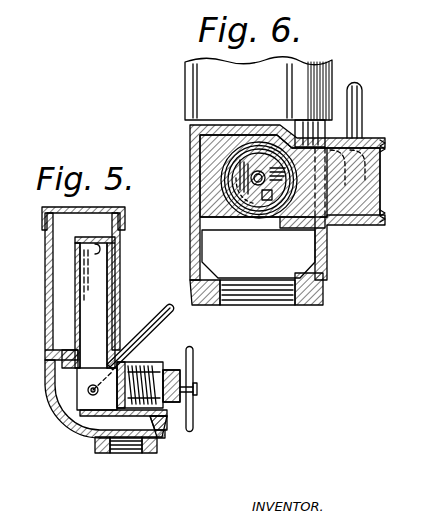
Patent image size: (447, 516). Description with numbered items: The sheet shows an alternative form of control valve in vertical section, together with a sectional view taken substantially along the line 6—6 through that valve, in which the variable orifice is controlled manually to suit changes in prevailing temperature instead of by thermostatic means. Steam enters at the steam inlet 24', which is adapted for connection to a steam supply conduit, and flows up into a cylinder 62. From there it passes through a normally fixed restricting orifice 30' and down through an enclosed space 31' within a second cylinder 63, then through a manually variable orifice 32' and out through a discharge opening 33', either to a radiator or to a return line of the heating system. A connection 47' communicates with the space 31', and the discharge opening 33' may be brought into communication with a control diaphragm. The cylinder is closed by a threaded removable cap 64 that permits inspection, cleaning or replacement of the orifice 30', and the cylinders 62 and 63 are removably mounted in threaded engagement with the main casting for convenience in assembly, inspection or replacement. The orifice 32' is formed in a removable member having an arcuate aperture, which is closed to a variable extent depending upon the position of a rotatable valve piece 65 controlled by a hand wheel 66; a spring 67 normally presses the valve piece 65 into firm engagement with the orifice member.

In FIG. 6, the cylinder 62 is at (195, 80).
In FIG. 5, the cylinder 62 is at (57, 302).
In FIG. 5, the threaded removable cap 64 is at (42, 213).
In FIG. 5, the normally fixed restricting orifice 30' is at (116, 302).
In FIG. 5, the enclosed space 31' is at (116, 305).
In FIG. 5, the cylinder 63 is at (118, 294).
In FIG. 6, the connection 47' is at (367, 99).
In FIG. 5, the connection 47' is at (169, 336).
In FIG. 6, the rotatable valve piece 65 is at (240, 186).
In FIG. 5, the rotatable valve piece 65 is at (182, 345).
In FIG. 6, the discharge opening 33' is at (287, 202).
In FIG. 5, the discharge opening 33' is at (200, 373).
In FIG. 5, the hand wheel 66 is at (197, 378).
In FIG. 6, the manually variable orifice 32' is at (258, 237).
In FIG. 5, the manually variable orifice 32' is at (96, 398).
In FIG. 6, the steam inlet 24' is at (256, 309).
In FIG. 5, the steam inlet 24' is at (106, 443).
In FIG. 5, the spring 67 is at (165, 420).
In FIG. 5, the section line 6— 6 is at (123, 478).